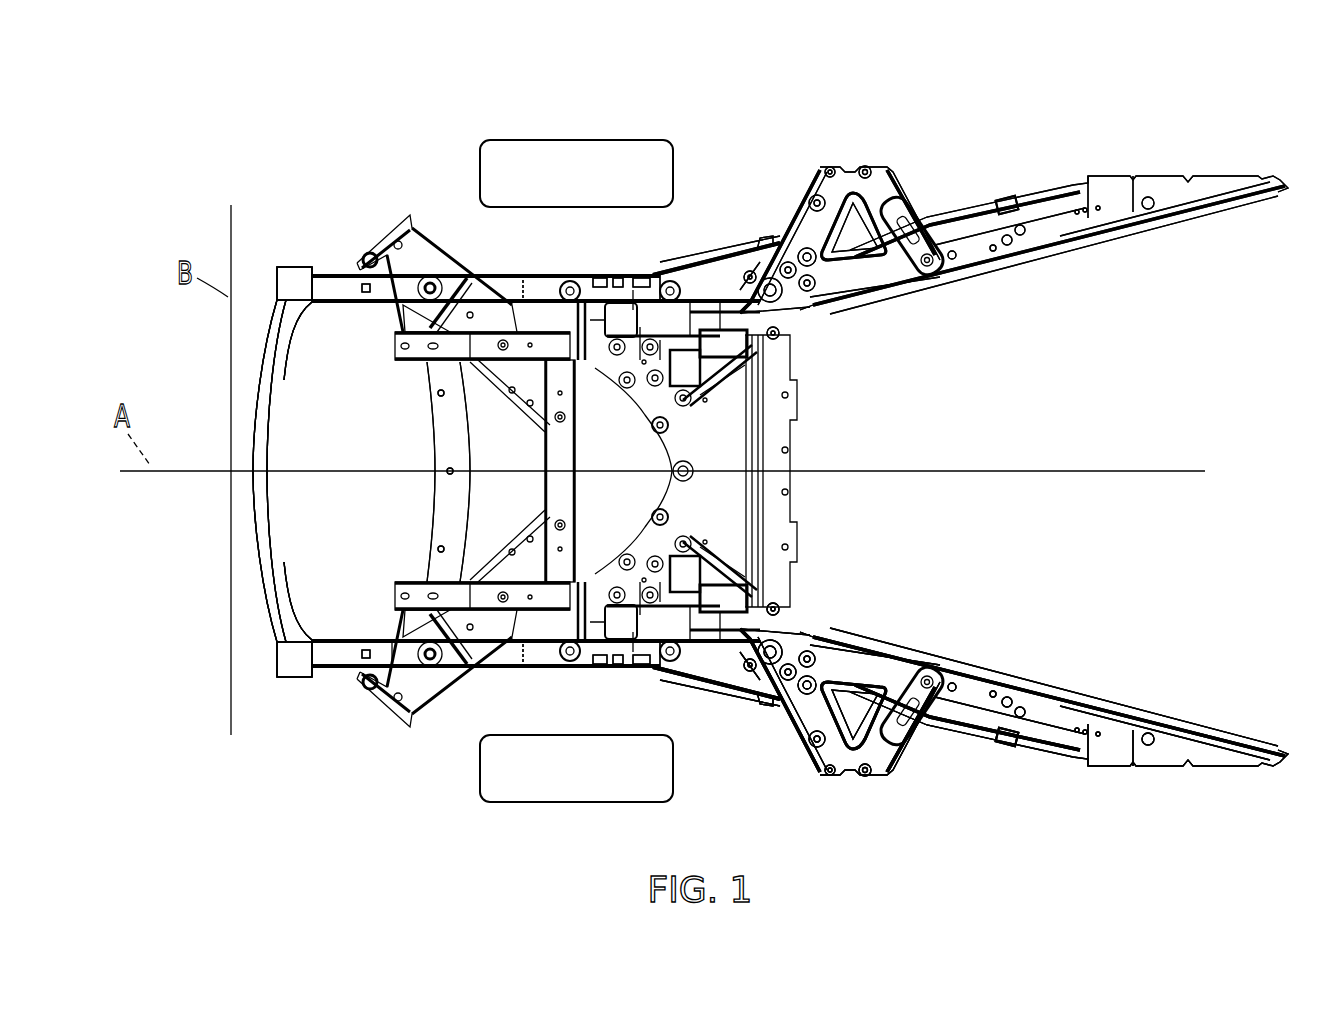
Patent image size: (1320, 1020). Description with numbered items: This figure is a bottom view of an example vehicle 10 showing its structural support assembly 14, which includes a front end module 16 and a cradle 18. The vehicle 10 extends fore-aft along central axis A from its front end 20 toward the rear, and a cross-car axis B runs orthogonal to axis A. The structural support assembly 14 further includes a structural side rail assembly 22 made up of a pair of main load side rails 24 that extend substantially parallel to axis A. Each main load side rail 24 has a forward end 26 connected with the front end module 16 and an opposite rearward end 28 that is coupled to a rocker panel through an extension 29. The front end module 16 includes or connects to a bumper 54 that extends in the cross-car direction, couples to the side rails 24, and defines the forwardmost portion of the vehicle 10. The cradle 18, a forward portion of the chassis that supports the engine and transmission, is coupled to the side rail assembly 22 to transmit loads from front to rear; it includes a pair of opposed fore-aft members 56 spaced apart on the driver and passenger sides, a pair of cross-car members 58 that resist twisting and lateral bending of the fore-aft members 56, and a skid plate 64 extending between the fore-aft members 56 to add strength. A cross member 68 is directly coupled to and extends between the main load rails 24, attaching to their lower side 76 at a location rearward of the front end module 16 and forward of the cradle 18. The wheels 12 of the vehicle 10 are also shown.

The vehicle 10 is at (1026, 114).
The wheels 12 is at (625, 165).
The structural support assembly 14 is at (320, 147).
The front end module 16 is at (264, 705).
The cradle 18 is at (426, 442).
The front end 20 is at (187, 526).
The structural side rail assembly 22 is at (1031, 783).
The main load side rails 24 is at (700, 239).
The forward end 26 is at (334, 705).
The rearward end 28 is at (829, 603).
The extension 29 is at (1025, 255).
The bumper 54 is at (258, 551).
The fore-aft members 56 is at (480, 350).
The cross-car members 58 is at (556, 437).
The skid plate 64 is at (735, 435).
The cross member 68 is at (443, 508).
The lower side 76 is at (510, 290).